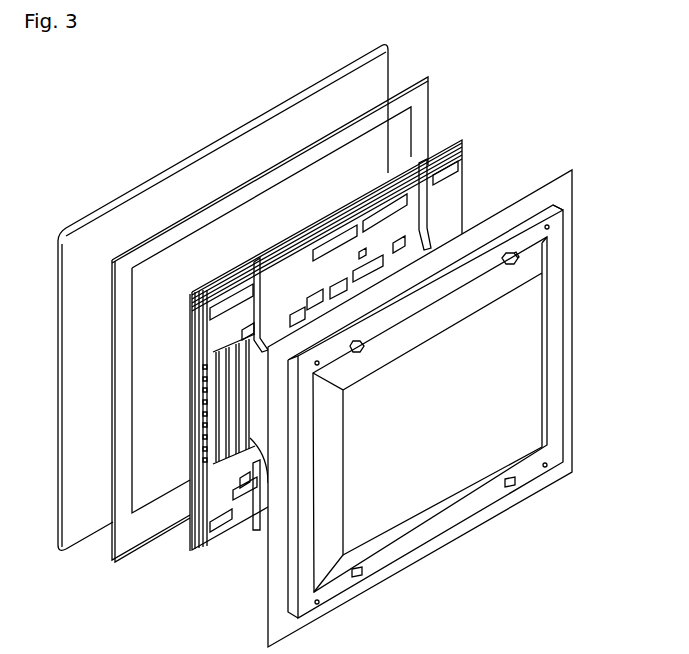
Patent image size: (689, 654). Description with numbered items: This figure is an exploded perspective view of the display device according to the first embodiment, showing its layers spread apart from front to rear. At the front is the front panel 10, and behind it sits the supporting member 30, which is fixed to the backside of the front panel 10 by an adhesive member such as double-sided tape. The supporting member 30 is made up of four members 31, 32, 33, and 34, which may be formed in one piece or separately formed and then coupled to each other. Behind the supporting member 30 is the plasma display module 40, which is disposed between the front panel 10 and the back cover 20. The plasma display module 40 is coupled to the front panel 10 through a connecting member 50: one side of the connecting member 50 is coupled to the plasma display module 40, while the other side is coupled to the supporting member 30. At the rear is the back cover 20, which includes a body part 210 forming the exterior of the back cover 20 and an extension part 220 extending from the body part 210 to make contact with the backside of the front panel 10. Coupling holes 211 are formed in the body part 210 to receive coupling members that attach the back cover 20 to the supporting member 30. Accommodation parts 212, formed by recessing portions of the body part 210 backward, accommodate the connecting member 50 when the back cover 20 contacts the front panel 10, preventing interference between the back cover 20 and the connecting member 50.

The front panel 10 is at (217, 148).
The supporting member 30 is at (252, 319).
The member of supporting member 31 is at (318, 150).
The member of supporting member 32 is at (155, 527).
The member of supporting member 33 is at (123, 453).
The member of supporting member 34 is at (430, 128).
The plasma display module 40 is at (370, 329).
The connecting member 50 is at (240, 282).
The back cover 20 is at (453, 390).
The body part 210 is at (542, 350).
The coupling holes 211 is at (566, 215).
The accommodation parts 212 is at (518, 259).
The extension part 220 is at (560, 188).